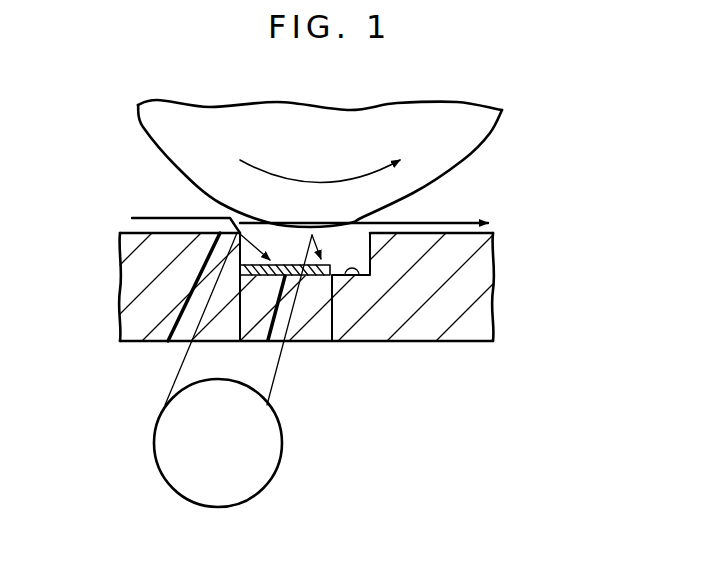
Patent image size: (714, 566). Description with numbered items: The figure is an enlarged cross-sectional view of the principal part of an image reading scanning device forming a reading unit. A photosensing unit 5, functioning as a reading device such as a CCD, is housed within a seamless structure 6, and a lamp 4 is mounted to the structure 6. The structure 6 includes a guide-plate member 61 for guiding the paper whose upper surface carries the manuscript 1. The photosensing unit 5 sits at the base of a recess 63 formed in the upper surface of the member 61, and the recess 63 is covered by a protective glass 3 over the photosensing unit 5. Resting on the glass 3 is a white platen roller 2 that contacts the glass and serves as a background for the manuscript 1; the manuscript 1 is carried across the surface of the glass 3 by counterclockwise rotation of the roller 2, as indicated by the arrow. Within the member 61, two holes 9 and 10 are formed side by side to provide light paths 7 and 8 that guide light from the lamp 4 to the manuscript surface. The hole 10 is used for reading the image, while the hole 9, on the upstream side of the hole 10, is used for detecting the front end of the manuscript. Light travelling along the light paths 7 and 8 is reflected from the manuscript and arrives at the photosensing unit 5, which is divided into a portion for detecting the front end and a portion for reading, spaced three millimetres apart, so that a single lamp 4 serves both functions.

The manuscript 1 is at (467, 220).
The white platen roller 2 is at (417, 120).
The protective glass 3 is at (362, 247).
The lamp 4 is at (265, 475).
The photosensing unit 5 is at (308, 276).
The seamless structure 6 is at (128, 288).
The guide-plate member 61 is at (132, 218).
The recess 63 is at (343, 280).
The light path 7 is at (172, 388).
The light path 8 is at (276, 378).
The hole 9 is at (173, 343).
The hole 10 is at (299, 330).